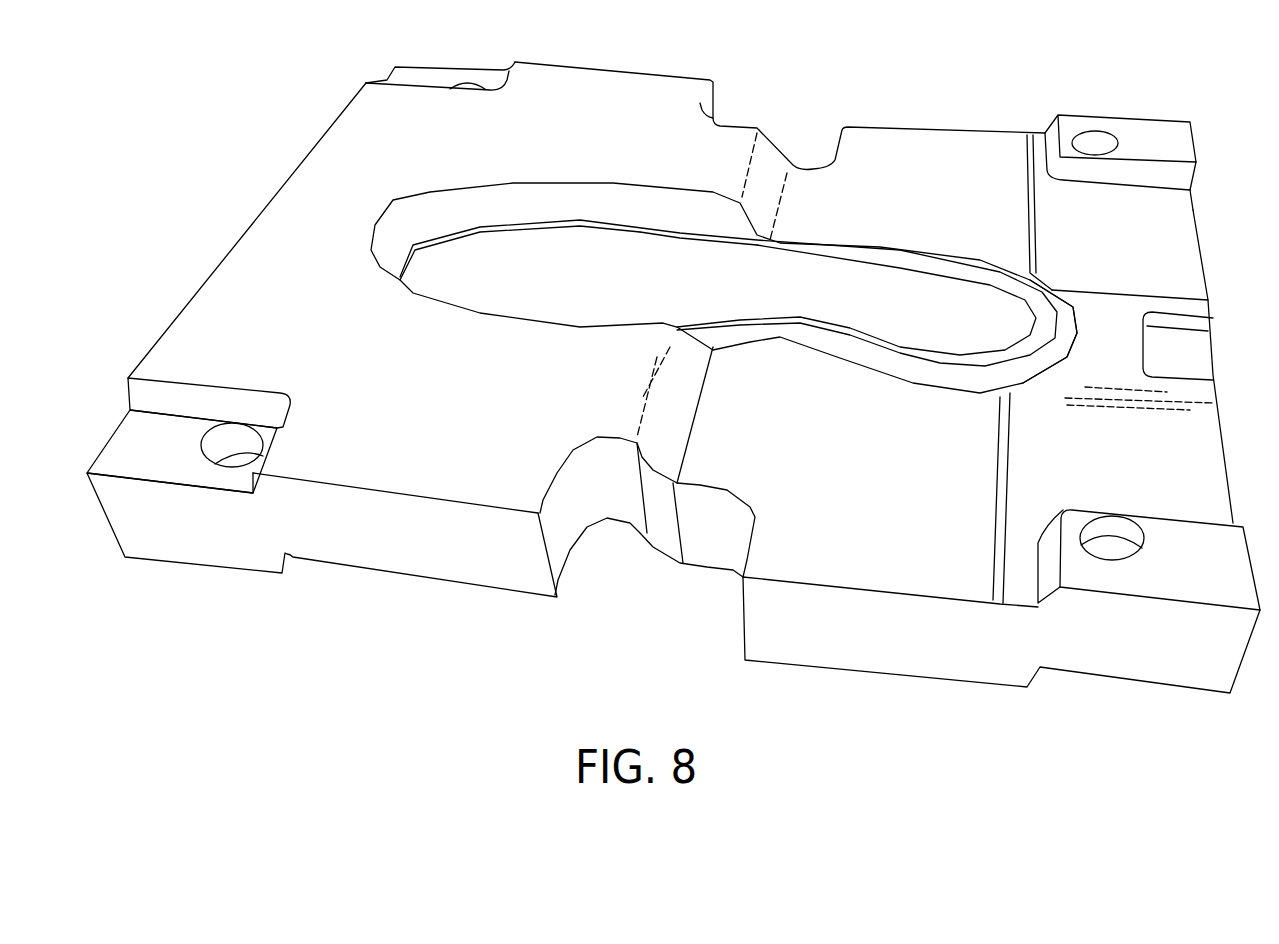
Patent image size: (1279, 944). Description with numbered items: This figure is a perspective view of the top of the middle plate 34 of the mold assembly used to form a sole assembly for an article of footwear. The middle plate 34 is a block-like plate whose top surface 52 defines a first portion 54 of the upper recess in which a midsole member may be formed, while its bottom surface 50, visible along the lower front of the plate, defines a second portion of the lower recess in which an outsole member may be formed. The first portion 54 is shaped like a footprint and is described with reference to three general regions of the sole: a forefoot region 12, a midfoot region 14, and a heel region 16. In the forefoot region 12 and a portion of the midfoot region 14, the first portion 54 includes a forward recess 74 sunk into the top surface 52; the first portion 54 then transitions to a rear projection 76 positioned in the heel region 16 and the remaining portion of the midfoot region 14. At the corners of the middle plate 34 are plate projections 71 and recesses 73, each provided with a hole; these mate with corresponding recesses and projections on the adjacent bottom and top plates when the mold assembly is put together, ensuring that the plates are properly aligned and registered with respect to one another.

The forefoot region 12 is at (475, 278).
The midfoot region 14 is at (717, 293).
The heel region 16 is at (945, 325).
The middle plate 34 is at (352, 545).
The bottom surface 50 is at (823, 667).
The top surface 52 is at (409, 423).
The first portion 54 is at (803, 273).
The plate projection 71 is at (1149, 153).
The recess 73 is at (428, 73).
The forward recess 74 is at (552, 202).
The rear projection 76 is at (908, 330).